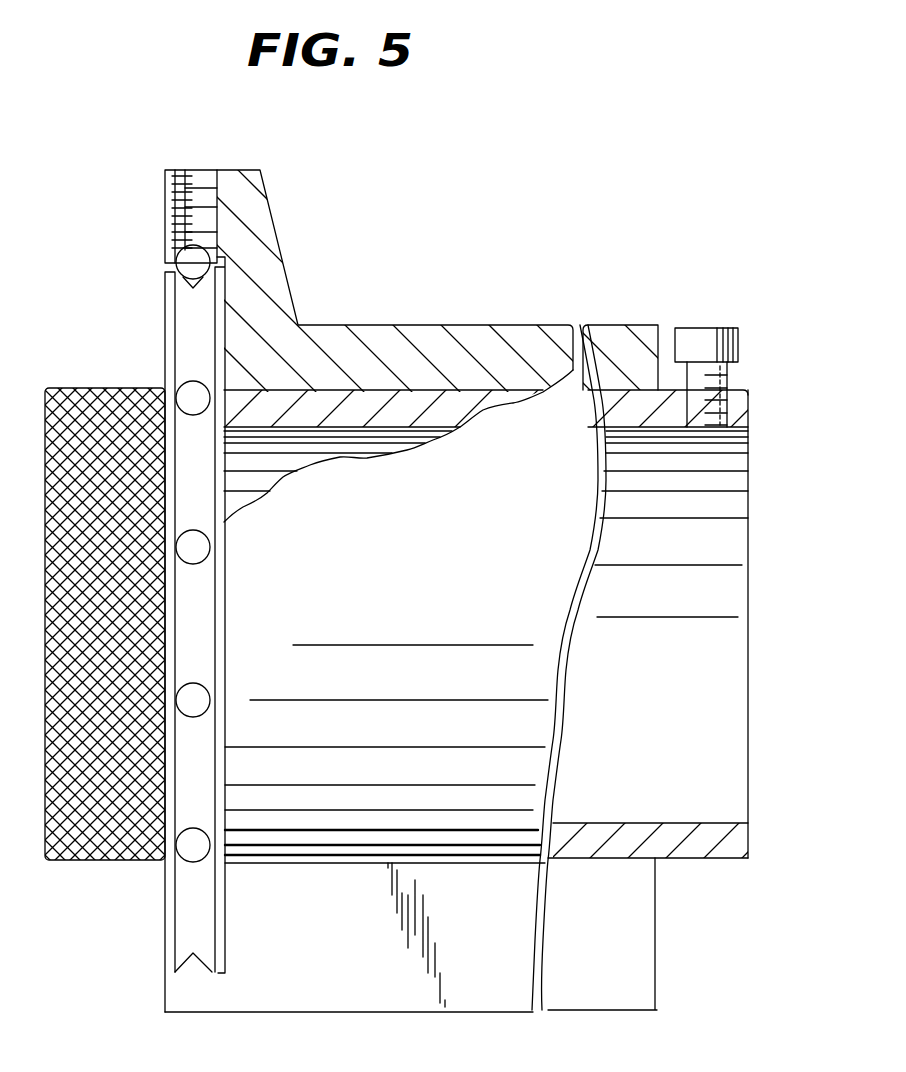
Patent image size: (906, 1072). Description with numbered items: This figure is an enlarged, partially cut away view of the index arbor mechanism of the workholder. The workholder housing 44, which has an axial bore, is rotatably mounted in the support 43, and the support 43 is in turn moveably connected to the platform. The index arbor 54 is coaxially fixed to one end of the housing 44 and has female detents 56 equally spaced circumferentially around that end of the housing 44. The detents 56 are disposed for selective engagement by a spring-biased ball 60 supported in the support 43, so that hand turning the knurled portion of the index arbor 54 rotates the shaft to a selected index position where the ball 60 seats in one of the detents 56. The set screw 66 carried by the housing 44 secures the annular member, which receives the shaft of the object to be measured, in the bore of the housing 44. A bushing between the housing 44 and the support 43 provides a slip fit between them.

The support 43 is at (265, 225).
The workholder housing 44 is at (203, 660).
The index arbor 54 is at (95, 383).
The female detents 56 is at (190, 716).
The spring-biased ball 60 is at (183, 258).
The set screw 66 is at (697, 340).